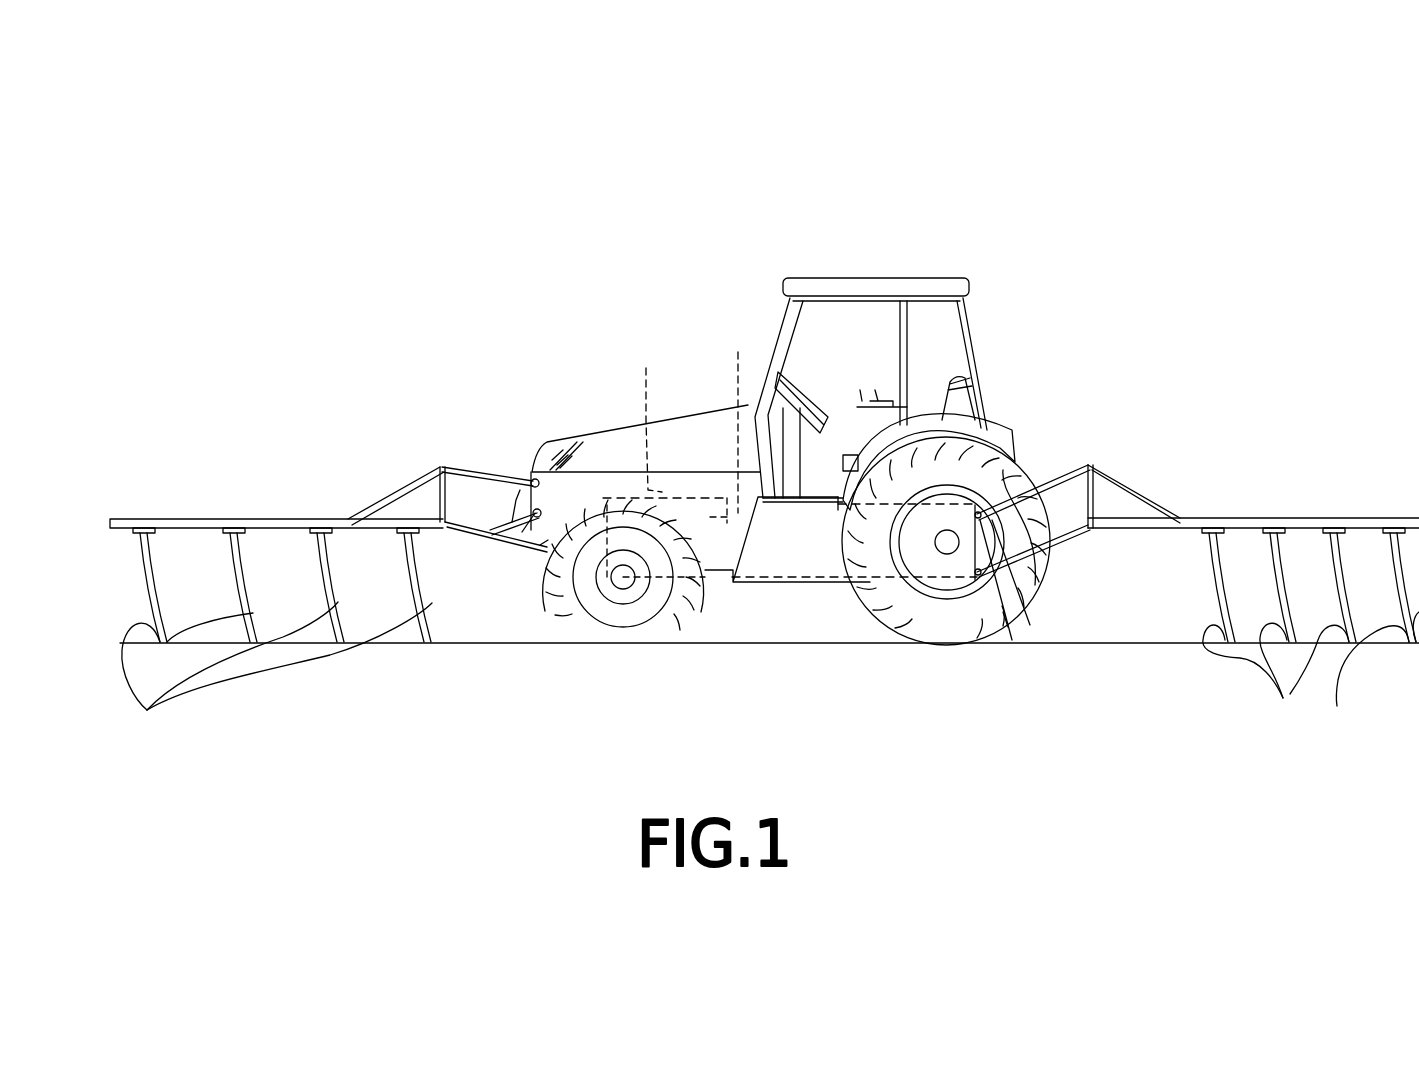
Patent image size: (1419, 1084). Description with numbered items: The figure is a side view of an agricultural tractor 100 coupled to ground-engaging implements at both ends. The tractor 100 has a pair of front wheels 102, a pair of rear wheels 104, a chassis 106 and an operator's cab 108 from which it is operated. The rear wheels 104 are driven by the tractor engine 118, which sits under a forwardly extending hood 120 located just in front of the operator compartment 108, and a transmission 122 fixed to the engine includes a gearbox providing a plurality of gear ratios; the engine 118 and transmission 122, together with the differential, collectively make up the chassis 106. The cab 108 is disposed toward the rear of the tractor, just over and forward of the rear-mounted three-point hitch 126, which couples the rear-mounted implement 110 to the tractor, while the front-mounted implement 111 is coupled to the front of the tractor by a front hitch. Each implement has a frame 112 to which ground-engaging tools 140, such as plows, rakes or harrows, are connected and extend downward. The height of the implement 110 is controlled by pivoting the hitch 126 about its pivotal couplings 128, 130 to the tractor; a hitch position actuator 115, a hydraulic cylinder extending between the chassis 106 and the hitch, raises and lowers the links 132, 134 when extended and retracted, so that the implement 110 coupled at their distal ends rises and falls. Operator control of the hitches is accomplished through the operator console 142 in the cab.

The agricultural tractor 100 is at (740, 256).
The front wheels 102 is at (600, 632).
The rear wheels 104 is at (903, 620).
The chassis 106 is at (717, 582).
The operator's cab 108 is at (972, 340).
The rear-mounted implement 110 is at (1283, 376).
The front-mounted implement 111 is at (263, 383).
The frame 112 is at (263, 520).
The hitch position actuator 115 is at (512, 522).
The tractor engine 118 is at (646, 368).
The hood 120 is at (548, 440).
The transmission 122 is at (738, 352).
The rear-mounted three-point hitch 126 is at (1054, 326).
The pivotal coupling 128 is at (542, 548).
The pivotal coupling 130 is at (533, 480).
The link 132 is at (458, 463).
The link 134 is at (467, 532).
The ground-engaging tools 140 is at (148, 712).
The operator console 142 is at (857, 406).